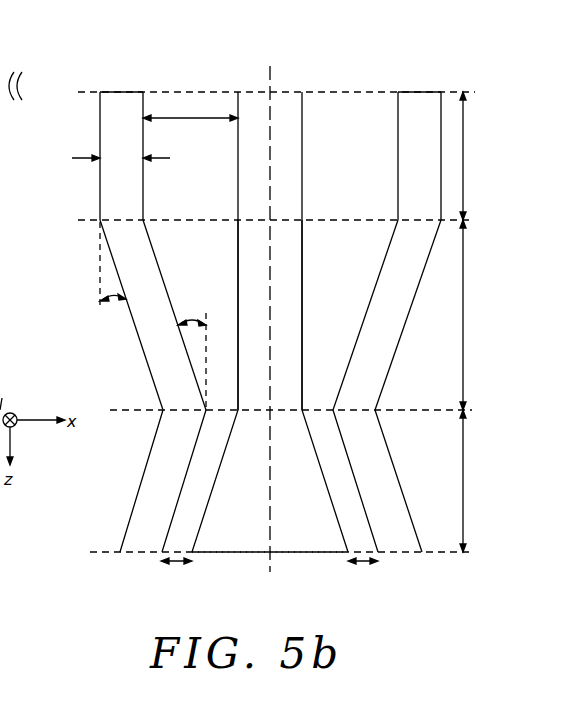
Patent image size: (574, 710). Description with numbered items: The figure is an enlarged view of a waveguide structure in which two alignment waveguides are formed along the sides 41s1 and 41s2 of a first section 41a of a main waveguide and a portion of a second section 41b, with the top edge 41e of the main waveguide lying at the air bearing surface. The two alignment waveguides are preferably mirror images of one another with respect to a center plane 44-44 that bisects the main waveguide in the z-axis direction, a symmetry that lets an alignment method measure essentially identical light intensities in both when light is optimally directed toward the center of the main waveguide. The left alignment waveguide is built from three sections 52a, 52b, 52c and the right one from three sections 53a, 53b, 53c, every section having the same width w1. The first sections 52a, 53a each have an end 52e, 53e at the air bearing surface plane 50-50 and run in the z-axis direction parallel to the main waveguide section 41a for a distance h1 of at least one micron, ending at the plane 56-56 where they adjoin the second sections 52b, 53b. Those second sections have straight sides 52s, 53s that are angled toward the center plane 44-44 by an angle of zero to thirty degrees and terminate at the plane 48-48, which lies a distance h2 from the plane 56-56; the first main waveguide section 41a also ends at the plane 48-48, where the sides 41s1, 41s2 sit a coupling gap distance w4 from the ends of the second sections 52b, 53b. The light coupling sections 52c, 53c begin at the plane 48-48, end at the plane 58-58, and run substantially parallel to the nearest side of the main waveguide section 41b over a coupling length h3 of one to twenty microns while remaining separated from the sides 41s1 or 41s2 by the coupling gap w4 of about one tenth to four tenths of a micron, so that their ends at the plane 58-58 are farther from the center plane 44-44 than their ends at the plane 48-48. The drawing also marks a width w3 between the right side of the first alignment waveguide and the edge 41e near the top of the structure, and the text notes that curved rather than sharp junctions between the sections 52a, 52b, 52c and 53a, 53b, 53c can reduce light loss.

The center plane 44 is at (272, 318).
The ABS plane 50 is at (272, 93).
The plane at second end of first AWVG sections 56 is at (272, 221).
The plane at second end of second AWVG sections 48 is at (290, 411).
The plane at second end of light coupling sections 58 is at (279, 555).
The first section of AWVG 52 52a is at (114, 105).
The end of section 52a 52e is at (136, 92).
The straight side of section 52b 52s is at (141, 345).
The second section of AWVG 52 52b is at (160, 372).
The light coupling section of AWVG 52 52c is at (145, 491).
The edge of lens 41e is at (272, 92).
The first section of main waveguide 41a is at (293, 105).
The second section of main waveguide 41b is at (312, 540).
The first side of main waveguide 41s1 is at (237, 310).
The second side of main waveguide 41s2 is at (303, 310).
The first section of AWVG 53 53a is at (430, 105).
The end of section 53a 53e is at (404, 92).
The straight side of section 53b 53s is at (398, 340).
The second section of AWVG 53 53b is at (378, 372).
The light coupling section of AWVG 53 53c is at (378, 443).
The width of AWVG sections w1 is at (121, 158).
The width w3 is at (190, 108).
The coupling gap distance w4 is at (269, 573).
The length of first AWVG sections h1 is at (476, 156).
The length of second AWVG sections h2 is at (476, 315).
The coupling length h3 is at (476, 481).